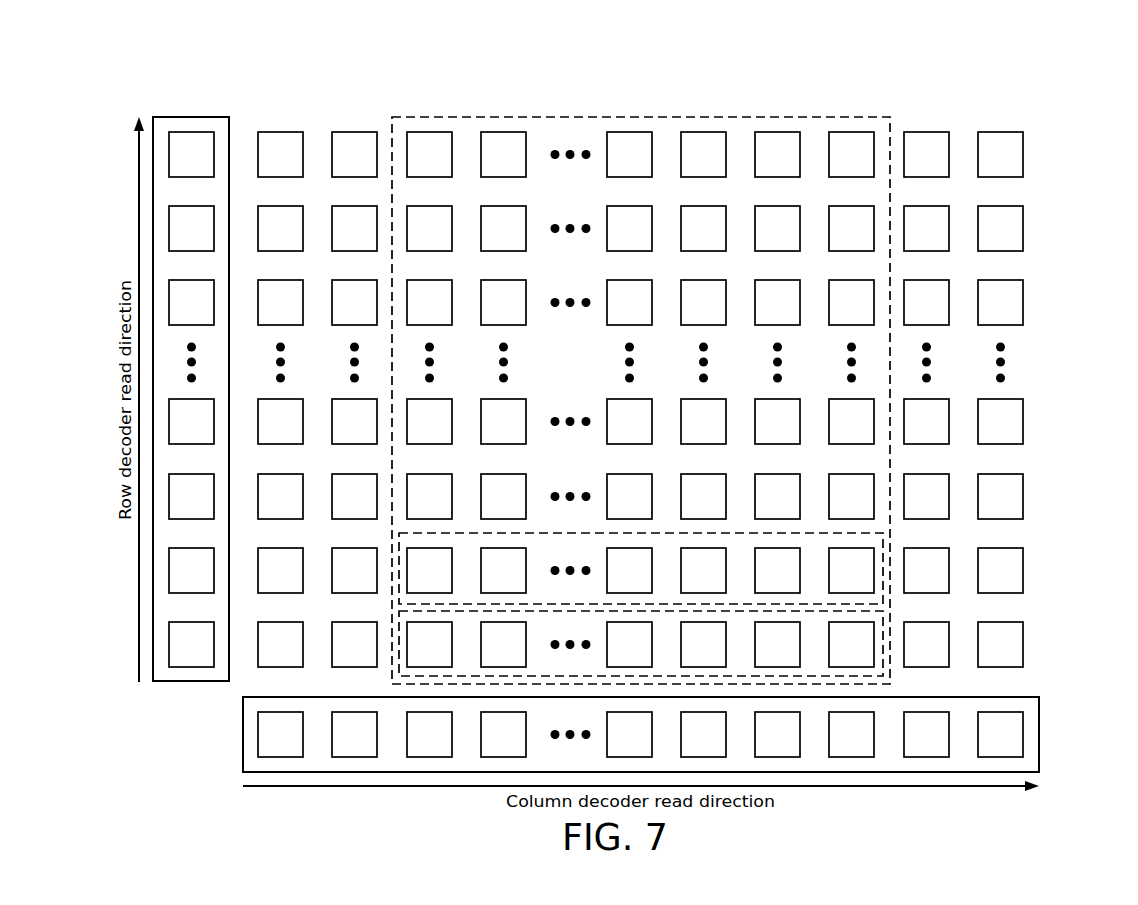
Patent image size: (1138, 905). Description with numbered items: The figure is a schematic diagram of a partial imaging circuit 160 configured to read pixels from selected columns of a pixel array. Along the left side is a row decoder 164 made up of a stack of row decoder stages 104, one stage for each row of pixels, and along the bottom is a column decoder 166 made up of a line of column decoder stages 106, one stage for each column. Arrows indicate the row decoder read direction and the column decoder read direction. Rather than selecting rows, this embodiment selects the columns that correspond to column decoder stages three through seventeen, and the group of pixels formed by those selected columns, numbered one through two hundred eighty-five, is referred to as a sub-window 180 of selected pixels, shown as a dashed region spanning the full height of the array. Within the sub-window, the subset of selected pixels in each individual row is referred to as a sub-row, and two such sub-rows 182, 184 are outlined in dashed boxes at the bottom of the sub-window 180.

The partial imaging circuit 160 is at (1036, 78).
The row decoder 164 is at (215, 117).
The column decoder 166 is at (1039, 710).
The sub-window 180 is at (863, 117).
The sub-row 182 is at (883, 623).
The sub-row 184 is at (883, 548).
The row decoder stage 104 is at (183, 667).
The column decoder stage 106 is at (258, 742).